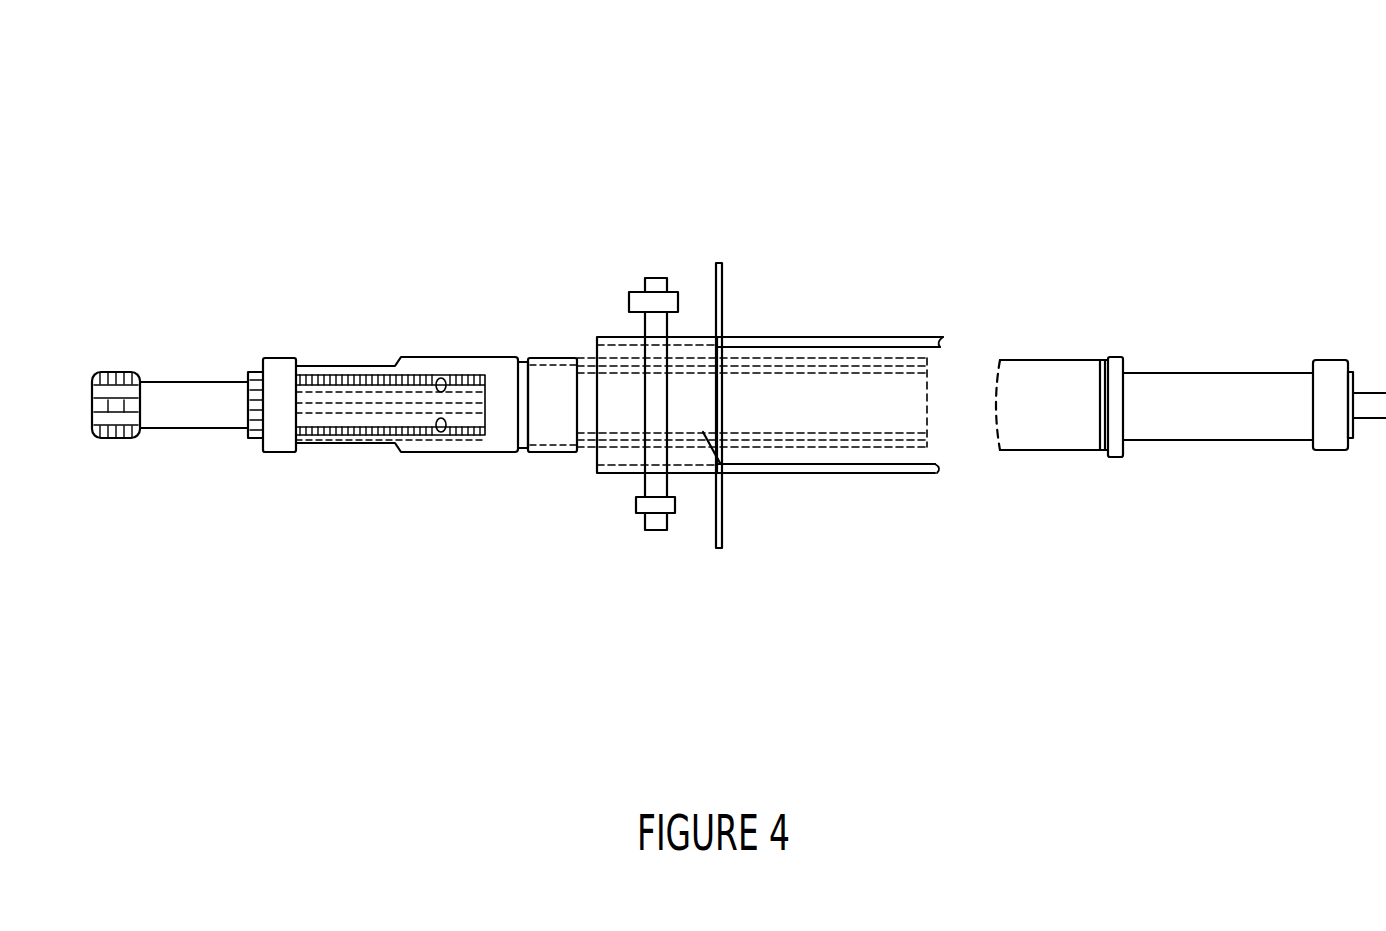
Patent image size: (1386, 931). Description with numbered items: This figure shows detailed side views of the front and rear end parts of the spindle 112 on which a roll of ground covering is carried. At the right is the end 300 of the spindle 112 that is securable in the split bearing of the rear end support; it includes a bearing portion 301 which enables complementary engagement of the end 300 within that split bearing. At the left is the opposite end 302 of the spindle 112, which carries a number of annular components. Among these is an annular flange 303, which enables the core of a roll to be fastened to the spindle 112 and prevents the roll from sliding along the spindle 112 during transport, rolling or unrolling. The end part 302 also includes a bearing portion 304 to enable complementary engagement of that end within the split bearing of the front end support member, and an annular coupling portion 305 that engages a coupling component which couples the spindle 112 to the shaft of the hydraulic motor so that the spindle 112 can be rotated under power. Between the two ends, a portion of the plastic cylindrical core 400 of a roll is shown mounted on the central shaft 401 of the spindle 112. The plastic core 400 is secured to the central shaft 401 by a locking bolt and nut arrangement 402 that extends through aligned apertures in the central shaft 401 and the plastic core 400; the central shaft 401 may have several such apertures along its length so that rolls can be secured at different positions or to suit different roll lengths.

The spindle 112 is at (958, 170).
The end of the spindle 300 is at (1191, 377).
The bearing portion 301 is at (1332, 436).
The opposite end of the spindle 302 is at (248, 322).
The annular flange 303 is at (722, 275).
The bearing portion 304 is at (282, 440).
The annular coupling portion 305 is at (105, 375).
The plastic cylindrical core 400 is at (615, 345).
The central shaft 401 is at (548, 352).
The locking bolt and nut arrangement 402 is at (655, 266).